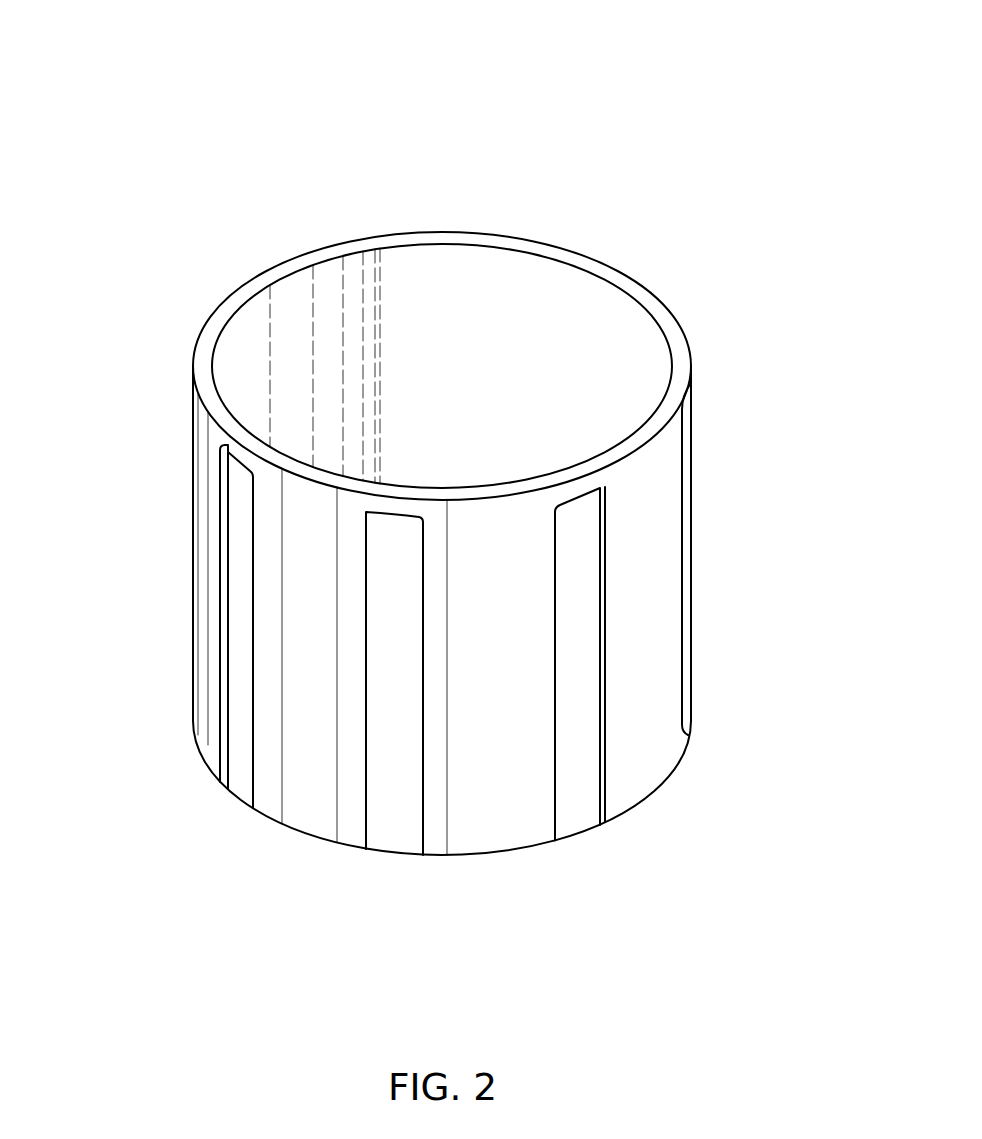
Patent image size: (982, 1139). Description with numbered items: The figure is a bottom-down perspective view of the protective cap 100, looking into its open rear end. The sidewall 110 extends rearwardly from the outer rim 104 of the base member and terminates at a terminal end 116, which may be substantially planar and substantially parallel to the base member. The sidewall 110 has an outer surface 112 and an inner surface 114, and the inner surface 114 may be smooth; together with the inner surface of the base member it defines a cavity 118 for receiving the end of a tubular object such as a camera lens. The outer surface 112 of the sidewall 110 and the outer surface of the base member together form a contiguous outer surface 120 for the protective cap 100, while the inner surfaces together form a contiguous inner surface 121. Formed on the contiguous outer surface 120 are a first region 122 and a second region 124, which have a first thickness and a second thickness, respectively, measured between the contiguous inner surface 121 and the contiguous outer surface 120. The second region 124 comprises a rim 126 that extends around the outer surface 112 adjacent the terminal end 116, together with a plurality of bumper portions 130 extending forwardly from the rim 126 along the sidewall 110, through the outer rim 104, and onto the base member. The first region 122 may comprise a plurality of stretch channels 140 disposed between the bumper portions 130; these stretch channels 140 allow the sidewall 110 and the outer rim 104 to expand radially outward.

The protective cap 100 is at (160, 62).
The sidewall 110 is at (650, 573).
The outer rim 104 is at (577, 828).
The outer surface 112 is at (243, 527).
The inner surface 114 is at (641, 343).
The terminal end 116 is at (299, 260).
The cavity 118 is at (443, 363).
The contiguous outer surface 120 is at (385, 600).
The contiguous inner surface 121 is at (529, 305).
The first region 122 is at (383, 827).
The second region 124 is at (300, 813).
The rim 126 is at (221, 438).
The bumper portions 130 is at (205, 739).
The stretch channels 140 is at (240, 698).